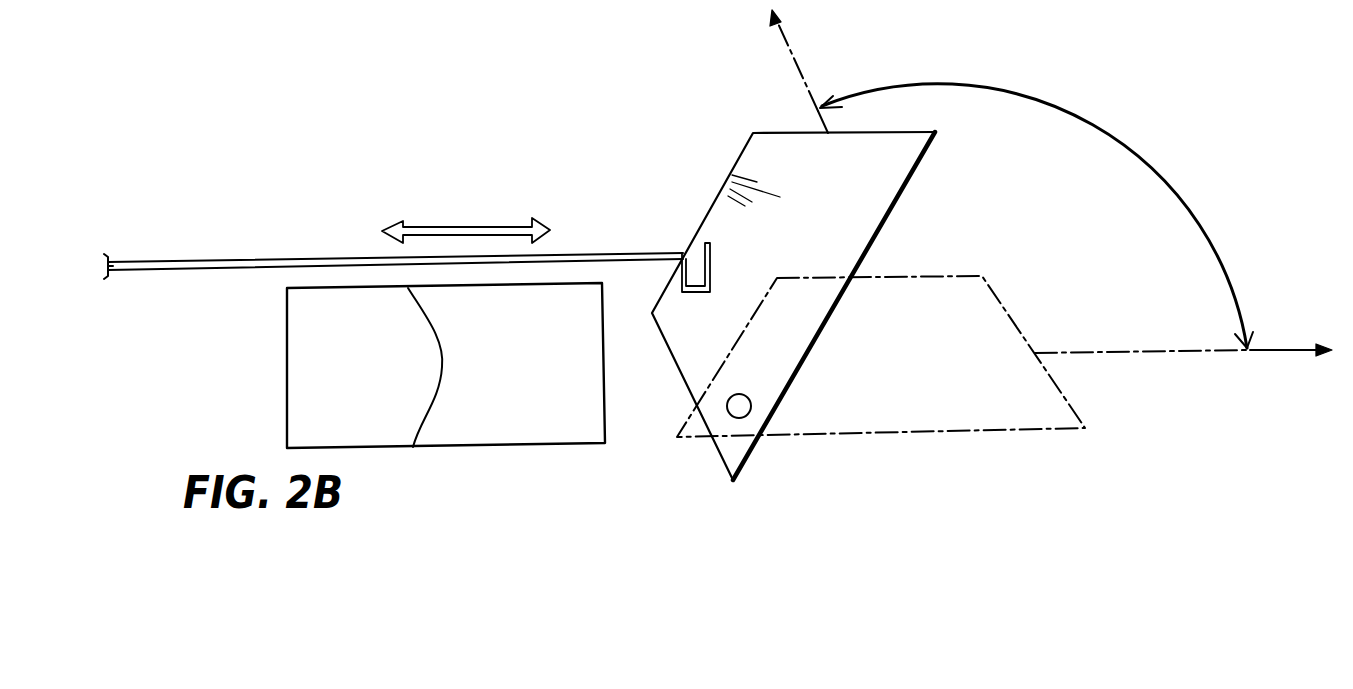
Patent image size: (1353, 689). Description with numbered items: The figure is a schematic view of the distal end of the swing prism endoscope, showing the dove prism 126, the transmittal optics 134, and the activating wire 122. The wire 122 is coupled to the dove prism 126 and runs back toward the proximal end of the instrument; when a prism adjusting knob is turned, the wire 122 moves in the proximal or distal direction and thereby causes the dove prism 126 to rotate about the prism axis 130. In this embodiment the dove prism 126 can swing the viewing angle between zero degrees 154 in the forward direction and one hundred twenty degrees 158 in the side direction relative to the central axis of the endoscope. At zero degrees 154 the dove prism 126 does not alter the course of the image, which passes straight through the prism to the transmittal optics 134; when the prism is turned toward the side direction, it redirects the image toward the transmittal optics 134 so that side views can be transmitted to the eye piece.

The wire 122 is at (272, 260).
The dove prism 126 is at (713, 206).
The prism axis 130 is at (751, 406).
The transmittal optics 134 is at (450, 448).
The zero degrees 154 is at (1117, 353).
The 120 degrees 158 is at (800, 76).